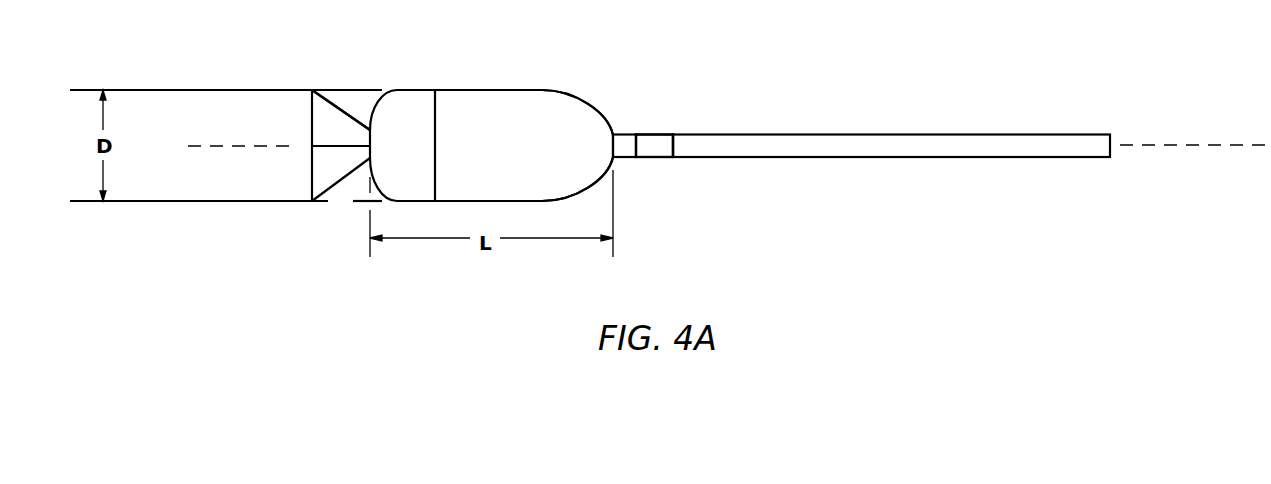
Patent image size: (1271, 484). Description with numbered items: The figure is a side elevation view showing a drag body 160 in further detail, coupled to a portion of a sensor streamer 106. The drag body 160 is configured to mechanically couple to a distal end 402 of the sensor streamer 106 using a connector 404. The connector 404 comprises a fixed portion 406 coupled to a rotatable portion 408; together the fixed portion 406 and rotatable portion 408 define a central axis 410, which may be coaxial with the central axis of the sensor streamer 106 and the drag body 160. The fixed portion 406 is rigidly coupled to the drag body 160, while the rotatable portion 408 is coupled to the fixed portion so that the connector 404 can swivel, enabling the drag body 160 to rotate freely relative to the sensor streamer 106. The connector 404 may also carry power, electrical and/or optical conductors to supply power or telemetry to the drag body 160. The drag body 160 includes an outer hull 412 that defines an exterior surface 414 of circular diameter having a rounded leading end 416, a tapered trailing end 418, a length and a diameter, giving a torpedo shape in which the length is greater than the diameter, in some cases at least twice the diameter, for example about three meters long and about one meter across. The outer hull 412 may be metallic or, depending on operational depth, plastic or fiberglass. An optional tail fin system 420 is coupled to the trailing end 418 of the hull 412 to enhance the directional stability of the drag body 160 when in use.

The sensor streamer 106 is at (863, 133).
The drag body 160 is at (468, 89).
The distal end 402 is at (677, 158).
The connector 404 is at (645, 124).
The fixed portion 406 is at (623, 131).
The rotatable portion 408 is at (657, 158).
The central axis 410 is at (212, 145).
The outer hull 412 is at (527, 87).
The exterior surface 414 is at (452, 97).
The leading end 416 is at (623, 168).
The trailing end 418 is at (359, 186).
The tail fin system 420 is at (341, 106).